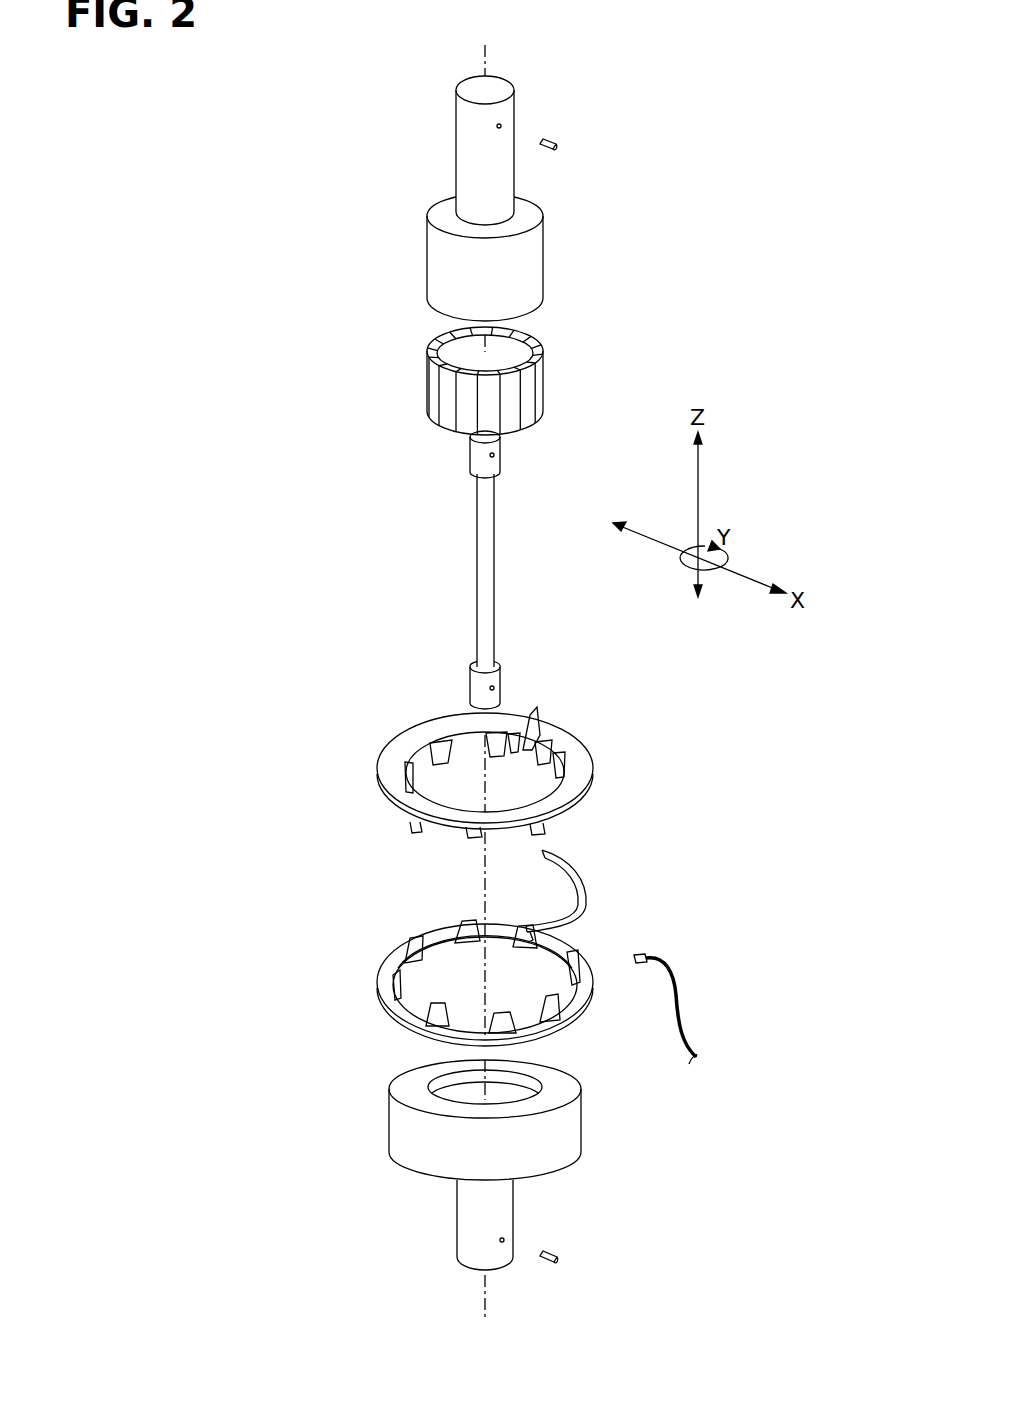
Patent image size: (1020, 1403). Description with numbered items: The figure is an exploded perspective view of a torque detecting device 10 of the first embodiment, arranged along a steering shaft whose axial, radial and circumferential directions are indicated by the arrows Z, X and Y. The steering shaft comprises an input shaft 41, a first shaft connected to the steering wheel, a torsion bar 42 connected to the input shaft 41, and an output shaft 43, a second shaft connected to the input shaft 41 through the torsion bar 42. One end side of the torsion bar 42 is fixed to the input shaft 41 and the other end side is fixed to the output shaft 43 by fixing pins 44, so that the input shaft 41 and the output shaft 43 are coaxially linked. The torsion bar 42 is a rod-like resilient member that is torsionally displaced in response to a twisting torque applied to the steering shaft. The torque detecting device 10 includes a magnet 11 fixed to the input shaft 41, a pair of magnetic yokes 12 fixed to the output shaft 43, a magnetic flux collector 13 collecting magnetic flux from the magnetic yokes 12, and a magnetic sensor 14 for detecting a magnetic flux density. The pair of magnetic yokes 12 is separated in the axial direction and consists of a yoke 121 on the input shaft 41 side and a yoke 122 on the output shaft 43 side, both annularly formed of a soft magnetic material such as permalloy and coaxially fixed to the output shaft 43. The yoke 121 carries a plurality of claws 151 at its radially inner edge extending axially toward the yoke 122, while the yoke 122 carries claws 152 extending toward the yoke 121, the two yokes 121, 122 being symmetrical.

The torque detecting device 10 is at (197, 325).
The magnet 11 is at (428, 395).
The pair of magnetic yokes 12 is at (261, 762).
The yoke 121 is at (430, 757).
The yoke 122 is at (456, 981).
The magnetic flux collector 13 is at (585, 895).
The magnetic sensor 14 is at (640, 964).
The claws 151 is at (538, 712).
The claws 152 is at (537, 937).
The input shaft 41 is at (468, 118).
The torsion bar 42 is at (477, 545).
The output shaft 43 is at (468, 1226).
The fixing pins 44 is at (558, 136).